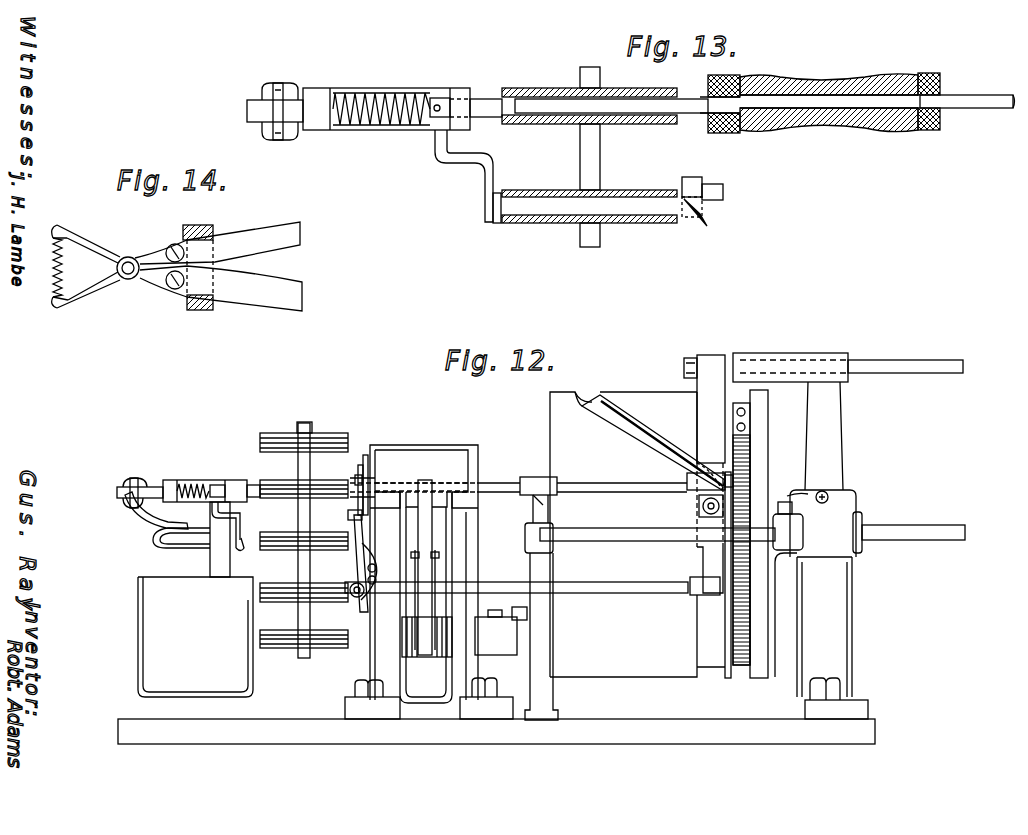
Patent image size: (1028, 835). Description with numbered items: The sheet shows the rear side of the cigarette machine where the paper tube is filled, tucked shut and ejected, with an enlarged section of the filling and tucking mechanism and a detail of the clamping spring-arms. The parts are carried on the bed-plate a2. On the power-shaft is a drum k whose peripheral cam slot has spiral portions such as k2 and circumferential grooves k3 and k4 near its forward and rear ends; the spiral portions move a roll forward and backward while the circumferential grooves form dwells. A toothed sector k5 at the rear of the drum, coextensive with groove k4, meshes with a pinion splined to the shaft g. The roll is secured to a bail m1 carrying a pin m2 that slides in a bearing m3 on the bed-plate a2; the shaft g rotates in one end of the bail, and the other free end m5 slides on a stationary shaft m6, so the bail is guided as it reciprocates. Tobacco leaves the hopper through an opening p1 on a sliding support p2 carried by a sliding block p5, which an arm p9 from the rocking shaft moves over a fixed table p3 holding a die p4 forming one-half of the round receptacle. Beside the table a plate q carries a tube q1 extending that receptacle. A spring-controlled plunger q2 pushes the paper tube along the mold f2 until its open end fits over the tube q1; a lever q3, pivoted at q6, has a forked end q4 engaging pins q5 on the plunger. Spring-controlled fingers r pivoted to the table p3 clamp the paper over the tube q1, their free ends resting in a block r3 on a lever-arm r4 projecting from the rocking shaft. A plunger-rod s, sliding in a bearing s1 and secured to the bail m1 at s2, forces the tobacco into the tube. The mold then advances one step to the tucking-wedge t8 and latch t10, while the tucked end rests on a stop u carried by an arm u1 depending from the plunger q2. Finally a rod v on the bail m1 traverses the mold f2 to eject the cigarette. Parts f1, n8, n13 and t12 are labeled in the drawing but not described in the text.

In FIG. 12, the bed-plate a2 is at (514, 736).
In FIG. 12, the shaft f1 is at (308, 423).
In FIG. 13, the mold f2 is at (560, 124).
In FIG. 12, the mold f2 is at (270, 433).
In FIG. 12, the shaft g is at (916, 541).
In FIG. 12, the drum k is at (621, 398).
In FIG. 12, the spiral portion of cam groove k2 is at (632, 436).
In FIG. 12, the circumferential groove k3 is at (705, 628).
In FIG. 12, the circumferential groove k4 is at (586, 400).
In FIG. 12, the toothed sector k5 is at (746, 667).
In FIG. 12, the bail m1 is at (712, 357).
In FIG. 12, the pin m2 is at (905, 360).
In FIG. 12, the bearing m3 is at (800, 355).
In FIG. 12, the free end of bail m5 is at (705, 527).
In FIG. 12, the stationary shaft m6 is at (655, 541).
In FIG. 12, the foot bolts n8 is at (492, 678).
In FIG. 12, the pulley n13 is at (408, 674).
In FIG. 14, the opening p1 is at (175, 290).
In FIG. 14, the sliding support p2 is at (53, 280).
In FIG. 13, the fixed table p3 is at (832, 132).
In FIG. 14, the fixed table p3 is at (205, 311).
In FIG. 13, the die p4 is at (848, 101).
In FIG. 12, the sliding block p5 is at (405, 470).
In FIG. 12, the arm p9 is at (434, 537).
In FIG. 13, the plate q is at (730, 134).
In FIG. 13, the tube q1 is at (768, 78).
In FIG. 14, the tube q1 is at (133, 257).
In FIG. 13, the plunger q2 is at (480, 100).
In FIG. 12, the plunger q2 is at (220, 490).
In FIG. 13, the lever q3 is at (395, 126).
In FIG. 12, the lever q3 is at (160, 522).
In FIG. 13, the forked end q4 is at (290, 135).
In FIG. 12, the forked end q4 is at (143, 479).
In FIG. 13, the pins q5 is at (278, 83).
In FIG. 12, the pins q5 is at (122, 506).
In FIG. 12, the pivot q6 is at (160, 543).
In FIG. 13, the spring-controlled fingers r is at (713, 87).
In FIG. 14, the spring-controlled fingers r is at (107, 246).
In FIG. 12, the spring-controlled fingers r is at (358, 462).
In FIG. 12, the block r3 is at (348, 464).
In FIG. 12, the lever-arm r4 is at (360, 606).
In FIG. 13, the plunger-rod s is at (986, 108).
In FIG. 12, the plunger-rod s is at (504, 483).
In FIG. 12, the bearing s1 is at (548, 488).
In FIG. 12, the attachment point s2 is at (686, 478).
In FIG. 13, the tucking-wedge t8 is at (725, 193).
In FIG. 12, the tucking-wedge t8 is at (350, 514).
In FIG. 12, the latch t10 is at (522, 618).
In FIG. 12, the column t12 is at (556, 697).
In FIG. 13, the stop u is at (495, 224).
In FIG. 12, the stop u is at (241, 549).
In FIG. 13, the arm u1 is at (483, 182).
In FIG. 12, the arm u1 is at (240, 515).
In FIG. 12, the rod v is at (634, 592).